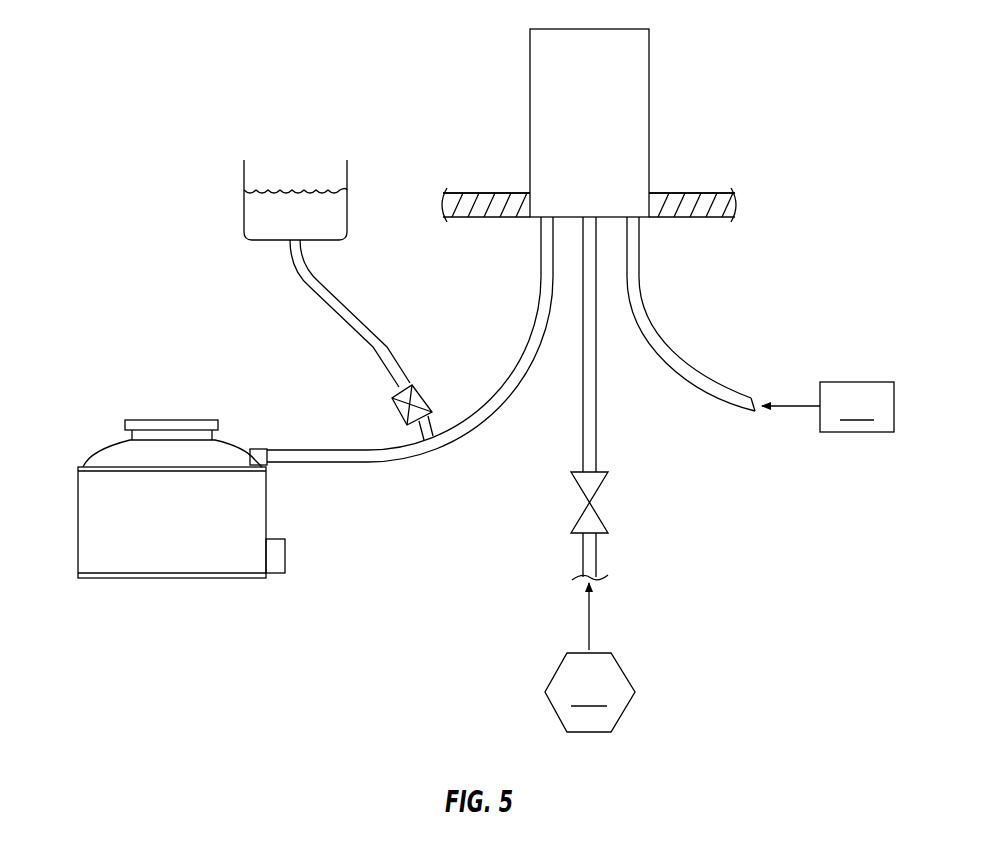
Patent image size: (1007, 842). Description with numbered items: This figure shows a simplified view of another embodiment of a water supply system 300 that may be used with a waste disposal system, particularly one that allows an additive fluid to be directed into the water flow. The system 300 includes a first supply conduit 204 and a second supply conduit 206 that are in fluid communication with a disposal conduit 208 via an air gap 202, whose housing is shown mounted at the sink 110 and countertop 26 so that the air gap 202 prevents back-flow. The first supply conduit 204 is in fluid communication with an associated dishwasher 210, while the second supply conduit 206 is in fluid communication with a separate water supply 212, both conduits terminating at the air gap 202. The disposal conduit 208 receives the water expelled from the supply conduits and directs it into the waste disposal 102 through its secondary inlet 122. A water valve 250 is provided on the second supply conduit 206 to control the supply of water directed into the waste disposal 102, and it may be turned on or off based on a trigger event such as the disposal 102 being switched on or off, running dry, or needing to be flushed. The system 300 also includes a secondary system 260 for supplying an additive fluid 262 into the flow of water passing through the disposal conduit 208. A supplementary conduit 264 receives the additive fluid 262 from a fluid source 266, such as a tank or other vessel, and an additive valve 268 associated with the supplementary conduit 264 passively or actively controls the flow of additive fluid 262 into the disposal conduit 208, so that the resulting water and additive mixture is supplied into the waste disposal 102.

The water supply system 300 is at (197, 167).
The air gap 202 is at (651, 112).
The sink 110 is at (738, 205).
The countertop 26 is at (738, 205).
The first supply conduit 204 is at (654, 306).
The dishwasher 210 is at (828, 407).
The second supply conduit 206 is at (600, 364).
The water valve 250 is at (572, 488).
The water supply 212 is at (590, 657).
The disposal conduit 208 is at (385, 468).
The secondary inlet 122 is at (253, 447).
The waste disposal 102 is at (89, 447).
The secondary system 260 is at (384, 283).
The fluid source 266 is at (244, 207).
The additive fluid 262 is at (290, 186).
The supplementary conduit 264 is at (386, 333).
The additive valve 268 is at (396, 411).